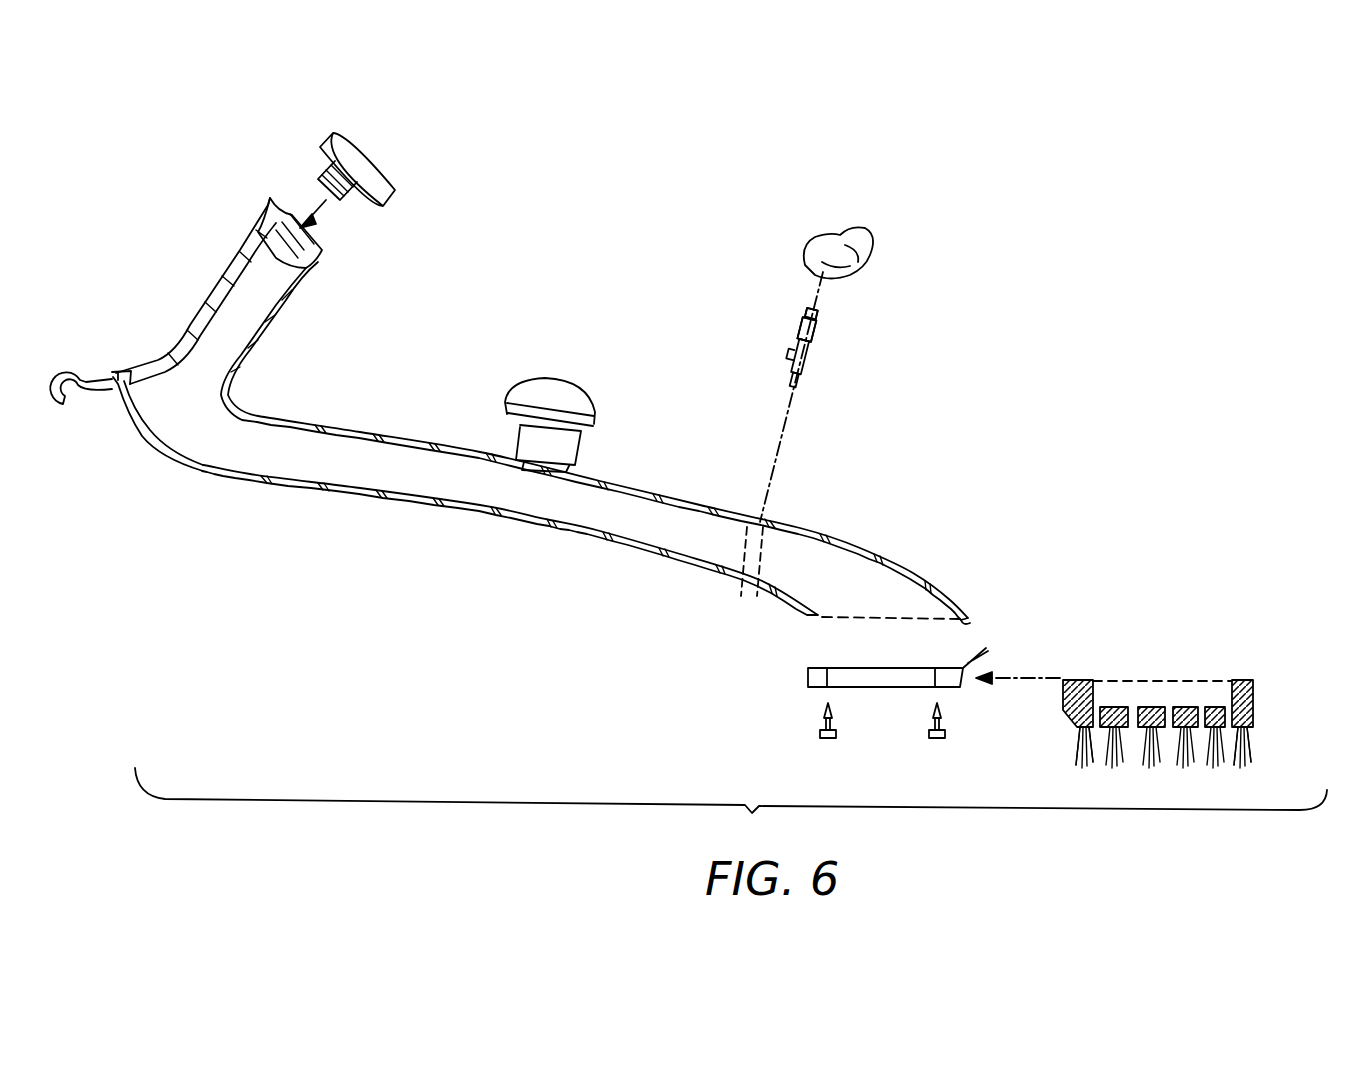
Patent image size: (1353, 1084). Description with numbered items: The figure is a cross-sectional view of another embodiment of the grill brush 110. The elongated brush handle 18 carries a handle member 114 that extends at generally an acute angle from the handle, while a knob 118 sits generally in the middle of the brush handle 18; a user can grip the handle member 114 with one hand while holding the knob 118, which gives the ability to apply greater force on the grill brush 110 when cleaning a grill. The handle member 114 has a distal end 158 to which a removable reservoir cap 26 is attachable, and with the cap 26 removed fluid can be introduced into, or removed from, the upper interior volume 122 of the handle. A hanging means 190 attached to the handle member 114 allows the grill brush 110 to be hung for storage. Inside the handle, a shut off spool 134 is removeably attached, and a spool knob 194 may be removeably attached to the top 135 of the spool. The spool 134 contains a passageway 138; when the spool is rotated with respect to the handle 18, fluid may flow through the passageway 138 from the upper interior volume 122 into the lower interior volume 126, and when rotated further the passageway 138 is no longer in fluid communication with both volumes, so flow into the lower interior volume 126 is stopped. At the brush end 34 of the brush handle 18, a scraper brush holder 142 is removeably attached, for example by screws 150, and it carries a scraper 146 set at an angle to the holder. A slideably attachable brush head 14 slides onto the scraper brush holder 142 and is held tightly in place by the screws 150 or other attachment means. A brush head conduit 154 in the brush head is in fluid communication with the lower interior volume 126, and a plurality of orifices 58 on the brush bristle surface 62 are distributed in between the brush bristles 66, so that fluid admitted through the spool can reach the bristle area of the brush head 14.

The brush head 14 is at (1255, 695).
The brush handle 18 is at (450, 492).
The removable reservoir cap 26 is at (372, 170).
The brush end 34 is at (963, 620).
The orifices 58 is at (1222, 768).
The brush bristle surface 62 is at (1068, 736).
The brush bristles 66 is at (1243, 762).
The grill brush 110 is at (1056, 427).
The handle member 114 is at (207, 320).
The knob 118 is at (550, 400).
The upper interior volume 122 is at (247, 440).
The lower interior volume 126 is at (848, 560).
The shut off spool 134 is at (818, 330).
The top of the spool 135 is at (820, 313).
The passageway 138 is at (798, 352).
The scraper brush holder 142 is at (955, 690).
The scraper 146 is at (985, 652).
The screws 150 is at (935, 740).
The brush head conduit 154 is at (1190, 690).
The distal end 158 is at (318, 256).
The hanging means 190 is at (75, 372).
The spool knob 194 is at (845, 258).